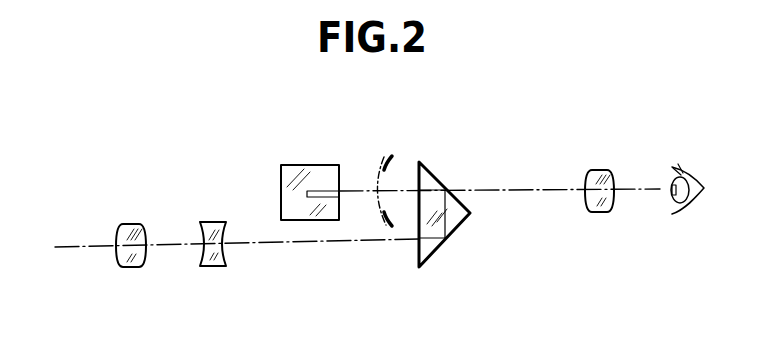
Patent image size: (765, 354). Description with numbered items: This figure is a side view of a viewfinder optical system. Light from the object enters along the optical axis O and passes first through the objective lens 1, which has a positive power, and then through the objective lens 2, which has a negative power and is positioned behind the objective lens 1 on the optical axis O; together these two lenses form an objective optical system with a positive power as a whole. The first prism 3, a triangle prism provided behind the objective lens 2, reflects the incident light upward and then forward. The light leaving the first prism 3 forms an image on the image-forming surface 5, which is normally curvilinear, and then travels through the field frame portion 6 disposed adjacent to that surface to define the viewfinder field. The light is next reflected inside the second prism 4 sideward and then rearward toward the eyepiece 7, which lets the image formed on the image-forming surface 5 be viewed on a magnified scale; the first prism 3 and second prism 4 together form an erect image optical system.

The optical axis O is at (63, 247).
The objective lens 1 is at (131, 268).
The objective lens 2 is at (216, 267).
The first prism 3 is at (433, 257).
The second prism 4 is at (281, 187).
The image-forming surface 5 is at (380, 167).
The field frame portion 6 is at (393, 158).
The eyepiece 7 is at (598, 213).